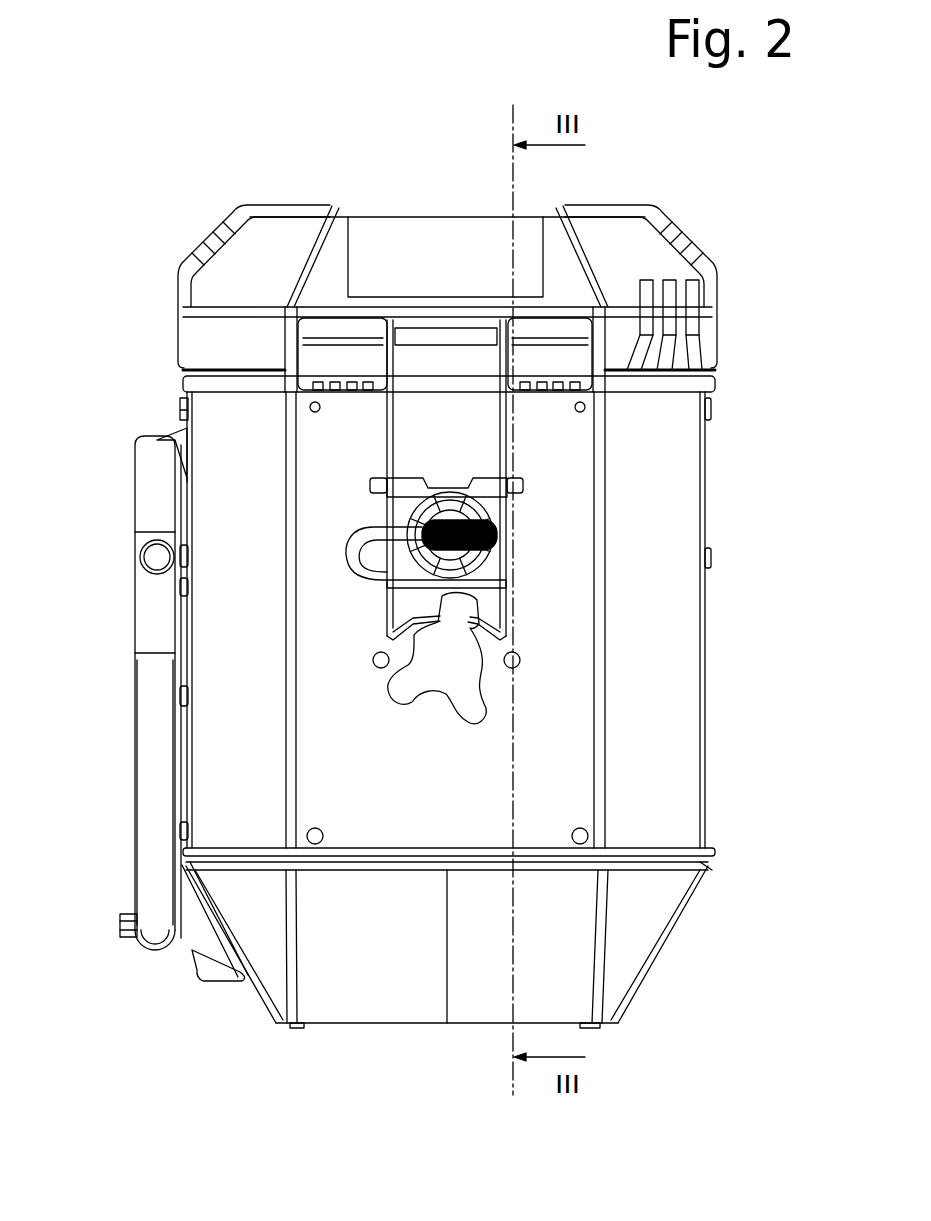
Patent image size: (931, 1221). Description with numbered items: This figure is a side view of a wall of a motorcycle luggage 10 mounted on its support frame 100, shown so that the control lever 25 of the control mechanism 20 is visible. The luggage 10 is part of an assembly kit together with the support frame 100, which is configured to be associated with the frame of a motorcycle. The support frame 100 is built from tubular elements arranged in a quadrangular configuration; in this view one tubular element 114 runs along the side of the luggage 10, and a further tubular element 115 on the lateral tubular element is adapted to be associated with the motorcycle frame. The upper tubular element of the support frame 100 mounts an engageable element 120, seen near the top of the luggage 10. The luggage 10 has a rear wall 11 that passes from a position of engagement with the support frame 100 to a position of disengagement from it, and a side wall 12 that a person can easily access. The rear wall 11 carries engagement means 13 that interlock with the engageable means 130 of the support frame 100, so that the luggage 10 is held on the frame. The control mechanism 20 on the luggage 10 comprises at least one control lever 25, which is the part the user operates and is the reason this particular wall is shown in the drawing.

The luggage of a motorcycle 10 is at (665, 507).
The rear wall 11 is at (186, 659).
The side wall 12 is at (655, 438).
The engagement means 13 is at (204, 935).
The control mechanism 20 is at (453, 672).
The control lever 25 is at (452, 645).
The support frame 100 is at (138, 628).
The tubular element 114 is at (152, 718).
The further tubular element 115 is at (146, 558).
The engageable element 120 is at (186, 430).
The engageable means 130 is at (187, 935).